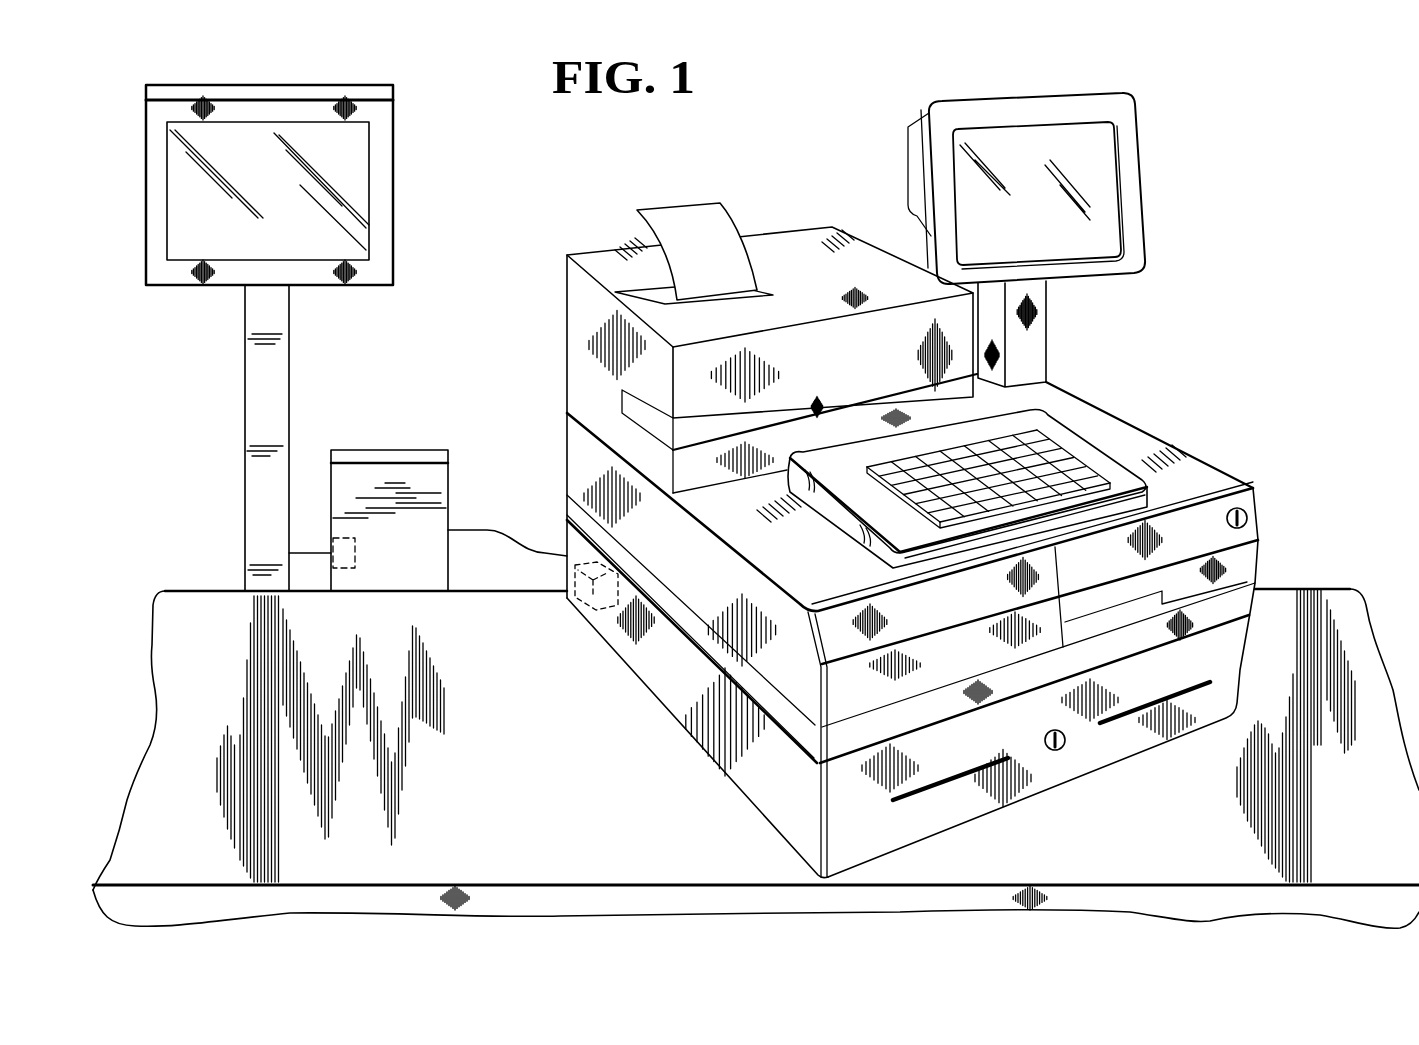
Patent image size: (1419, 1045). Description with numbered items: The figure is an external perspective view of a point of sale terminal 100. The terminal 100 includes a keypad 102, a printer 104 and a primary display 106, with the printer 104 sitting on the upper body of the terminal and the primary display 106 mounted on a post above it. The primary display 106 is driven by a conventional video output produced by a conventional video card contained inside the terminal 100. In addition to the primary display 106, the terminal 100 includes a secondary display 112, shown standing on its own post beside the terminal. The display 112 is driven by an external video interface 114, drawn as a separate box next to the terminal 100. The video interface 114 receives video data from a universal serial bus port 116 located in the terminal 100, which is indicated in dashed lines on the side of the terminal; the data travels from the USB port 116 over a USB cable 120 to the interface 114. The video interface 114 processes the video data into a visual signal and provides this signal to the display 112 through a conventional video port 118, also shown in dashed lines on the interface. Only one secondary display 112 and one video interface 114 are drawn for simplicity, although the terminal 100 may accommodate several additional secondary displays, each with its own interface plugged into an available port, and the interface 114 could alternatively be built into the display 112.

The point of sale terminal 100 is at (1305, 352).
The keypad 102 is at (1075, 447).
The printer 104 is at (807, 238).
The primary display 106 is at (1133, 224).
The secondary display 112 is at (393, 189).
The external video interface 114 is at (387, 461).
The USB port 116 is at (574, 604).
The video port 118 is at (345, 553).
The USB cable 120 is at (487, 528).